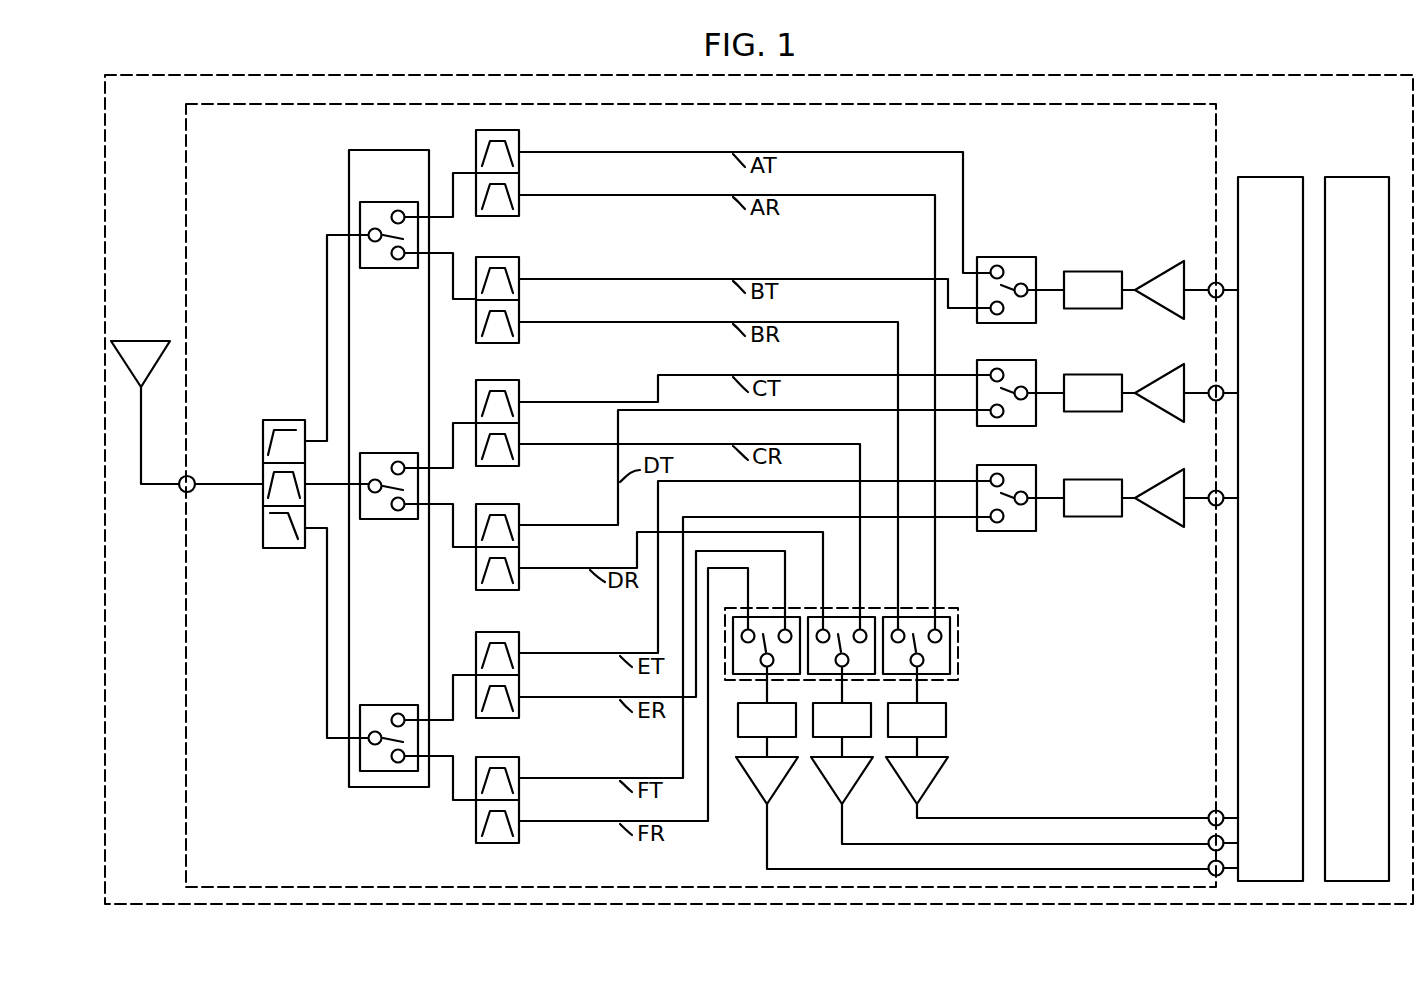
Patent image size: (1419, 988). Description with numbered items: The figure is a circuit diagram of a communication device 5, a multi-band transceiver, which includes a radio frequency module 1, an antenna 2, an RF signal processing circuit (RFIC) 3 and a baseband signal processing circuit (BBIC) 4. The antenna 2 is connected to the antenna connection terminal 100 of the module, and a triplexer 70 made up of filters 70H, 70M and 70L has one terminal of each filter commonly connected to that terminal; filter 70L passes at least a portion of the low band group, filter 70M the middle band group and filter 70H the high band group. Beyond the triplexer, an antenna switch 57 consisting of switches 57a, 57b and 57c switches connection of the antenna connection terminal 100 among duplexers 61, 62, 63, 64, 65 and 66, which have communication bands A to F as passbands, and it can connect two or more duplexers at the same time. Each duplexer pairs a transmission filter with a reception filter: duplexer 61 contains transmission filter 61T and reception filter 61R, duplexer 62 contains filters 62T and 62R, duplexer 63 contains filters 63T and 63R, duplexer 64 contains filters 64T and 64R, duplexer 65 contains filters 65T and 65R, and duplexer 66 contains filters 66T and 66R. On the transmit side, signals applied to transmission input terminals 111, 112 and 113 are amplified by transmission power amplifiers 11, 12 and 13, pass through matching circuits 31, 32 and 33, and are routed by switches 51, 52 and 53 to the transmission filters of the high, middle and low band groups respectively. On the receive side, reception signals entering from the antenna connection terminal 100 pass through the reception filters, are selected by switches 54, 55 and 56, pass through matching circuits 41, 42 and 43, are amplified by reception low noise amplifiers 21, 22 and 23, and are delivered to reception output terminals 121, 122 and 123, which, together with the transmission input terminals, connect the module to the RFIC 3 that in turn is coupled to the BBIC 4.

The radio frequency module 1 is at (1178, 104).
The antenna 2 is at (157, 341).
The RF signal processing circuit (RFIC) 3 is at (1255, 177).
The baseband signal processing circuit (BBIC) 4 is at (1340, 177).
The communication device 5 is at (1371, 76).
The transmission power amplifier 11 is at (1163, 312).
The transmission power amplifier 12 is at (1163, 415).
The transmission power amplifier 13 is at (1163, 521).
The reception low noise amplifier 21 is at (940, 781).
The reception low noise amplifier 22 is at (825, 779).
The reception low noise amplifier 23 is at (752, 779).
The matching circuit 31 is at (1075, 272).
The matching circuit 32 is at (1075, 375).
The matching circuit 33 is at (1075, 480).
The matching circuit 41 is at (946, 718).
The matching circuit 42 is at (814, 705).
The matching circuit 43 is at (739, 705).
The switch 51 is at (1000, 257).
The switch 52 is at (1000, 360).
The switch 53 is at (1000, 465).
The switch 54 is at (958, 640).
The switch 55 is at (820, 617).
The switch 56 is at (745, 617).
The switch 57 is at (412, 460).
The switch 57a is at (392, 202).
The switch 57b is at (395, 453).
The switch 57c is at (395, 705).
The duplexer 61 is at (556, 175).
The transmission filter 61T is at (522, 142).
The reception filter 61R is at (522, 184).
The duplexer 62 is at (544, 300).
The transmission filter 62T is at (550, 262).
The reception filter 62R is at (522, 311).
The duplexer 63 is at (546, 421).
The transmission filter 63T is at (522, 386).
The reception filter 63R is at (522, 437).
The duplexer 64 is at (546, 546).
The transmission filter 64T is at (545, 502).
The reception filter 64R is at (545, 556).
The duplexer 65 is at (547, 671).
The transmission filter 65T is at (522, 640).
The reception filter 65R is at (522, 688).
The duplexer 66 is at (543, 797).
The transmission filter 66T is at (545, 752).
The reception filter 66R is at (545, 808).
The triplexer 70 is at (280, 486).
The filter 70H is at (273, 420).
The filter 70M is at (263, 480).
The filter 70L is at (274, 548).
The antenna connection terminal 100 is at (179, 493).
The transmission input terminal 111 is at (1210, 300).
The transmission input terminal 112 is at (1210, 403).
The transmission input terminal 113 is at (1210, 508).
The reception output terminal 121 is at (1210, 812).
The reception output terminal 122 is at (1210, 838).
The reception output terminal 123 is at (1210, 863).